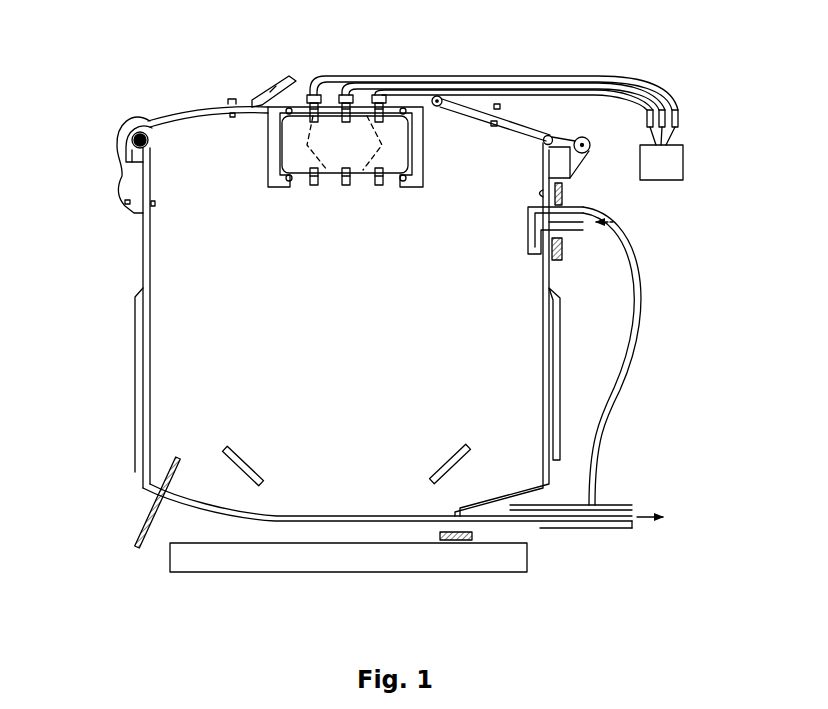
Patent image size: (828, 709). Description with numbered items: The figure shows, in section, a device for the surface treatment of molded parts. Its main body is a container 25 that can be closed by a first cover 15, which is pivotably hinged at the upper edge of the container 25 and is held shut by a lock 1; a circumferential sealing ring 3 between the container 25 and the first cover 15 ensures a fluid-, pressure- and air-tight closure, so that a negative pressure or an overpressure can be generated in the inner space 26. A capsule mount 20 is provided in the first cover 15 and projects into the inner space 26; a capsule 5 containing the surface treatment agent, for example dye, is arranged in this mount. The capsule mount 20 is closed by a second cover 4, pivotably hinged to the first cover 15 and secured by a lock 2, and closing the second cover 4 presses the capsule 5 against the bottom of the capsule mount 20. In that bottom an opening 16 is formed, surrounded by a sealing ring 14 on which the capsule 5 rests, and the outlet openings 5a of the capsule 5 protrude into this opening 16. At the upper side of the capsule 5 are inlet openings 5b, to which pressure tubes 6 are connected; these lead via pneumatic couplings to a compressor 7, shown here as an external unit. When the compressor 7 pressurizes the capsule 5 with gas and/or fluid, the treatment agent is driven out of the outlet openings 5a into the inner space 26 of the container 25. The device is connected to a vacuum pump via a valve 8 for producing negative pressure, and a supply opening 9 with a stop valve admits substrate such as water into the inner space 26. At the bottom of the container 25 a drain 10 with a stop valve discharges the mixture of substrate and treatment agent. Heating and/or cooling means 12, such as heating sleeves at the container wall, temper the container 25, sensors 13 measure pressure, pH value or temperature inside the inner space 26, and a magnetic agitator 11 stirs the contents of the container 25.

The lock 1 is at (116, 172).
The lock 2 is at (248, 95).
The sealing ring 3 is at (152, 143).
The second cover 4 is at (334, 76).
The capsule 5 is at (376, 178).
The outlet openings 5a is at (312, 188).
The inlet openings 5b is at (305, 120).
The pressure tubes 6 is at (616, 77).
The compressor 7 is at (664, 163).
The valve 8 is at (566, 191).
The supply opening 9 is at (563, 226).
The drain 10 is at (529, 521).
The magnetic agitator 11 is at (250, 451).
The heating and/or cooling means 12 is at (133, 348).
The sensors 13 is at (172, 470).
The sealing ring 14 is at (289, 186).
The first cover 15 is at (190, 112).
The opening 16 is at (333, 196).
The capsule mount 20 is at (430, 184).
The container 25 is at (142, 264).
The inner space 26 is at (352, 365).